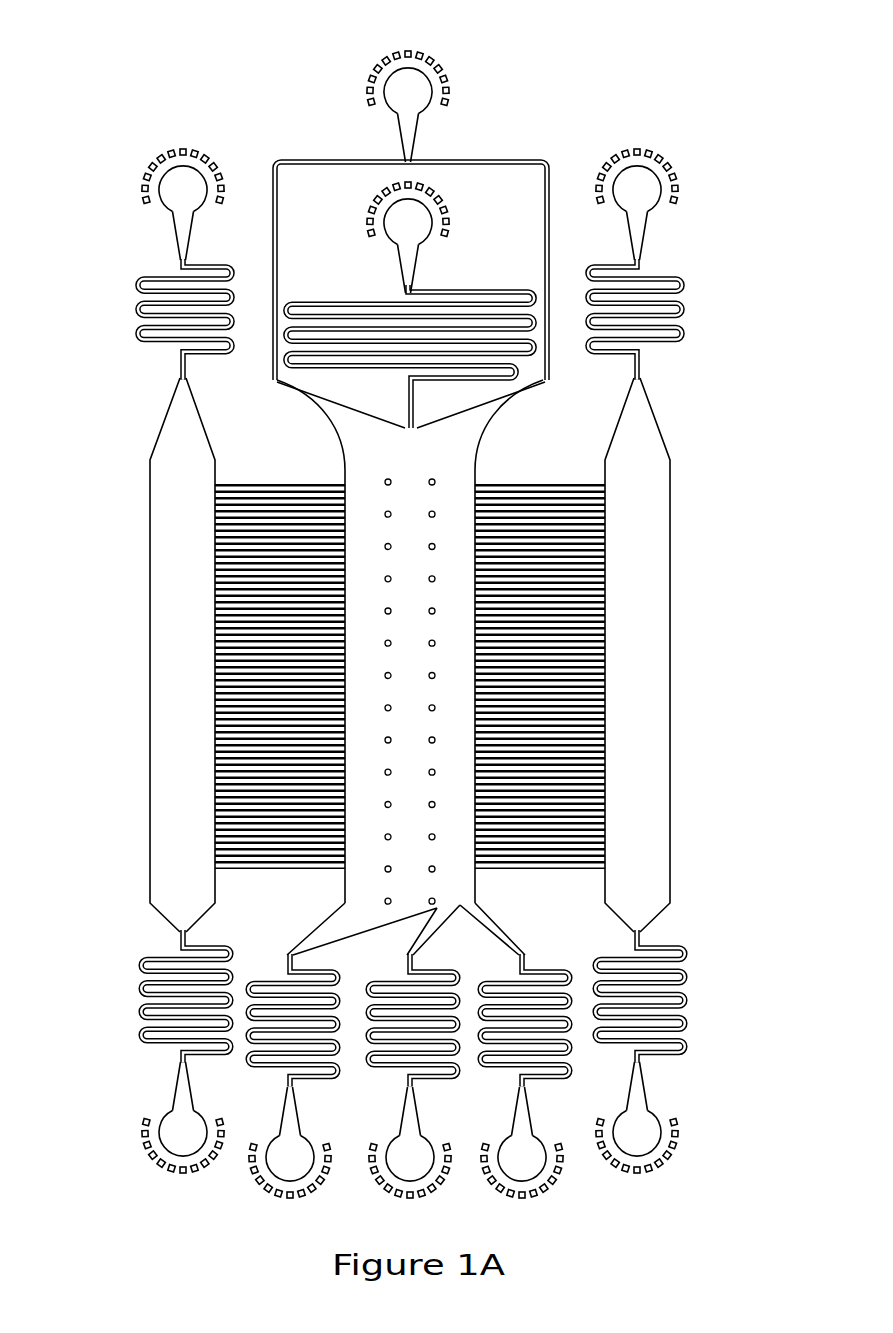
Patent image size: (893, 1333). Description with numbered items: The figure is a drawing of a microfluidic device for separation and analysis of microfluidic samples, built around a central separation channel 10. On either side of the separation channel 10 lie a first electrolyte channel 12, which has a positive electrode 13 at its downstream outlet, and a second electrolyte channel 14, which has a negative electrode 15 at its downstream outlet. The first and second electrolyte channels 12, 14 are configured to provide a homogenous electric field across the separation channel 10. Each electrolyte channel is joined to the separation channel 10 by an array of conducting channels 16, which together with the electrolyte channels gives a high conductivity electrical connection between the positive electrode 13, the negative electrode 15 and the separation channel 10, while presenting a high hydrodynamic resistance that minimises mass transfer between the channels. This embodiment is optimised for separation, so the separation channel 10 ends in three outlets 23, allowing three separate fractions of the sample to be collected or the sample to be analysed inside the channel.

The separation channel 10 is at (372, 437).
The first electrolyte channel 12 is at (182, 192).
The second electrolyte channel 14 is at (638, 190).
The positive electrode 13 is at (178, 1132).
The negative electrode 15 is at (638, 1132).
The array of conducting channels 16 is at (273, 878).
The outlets 23 is at (282, 1157).